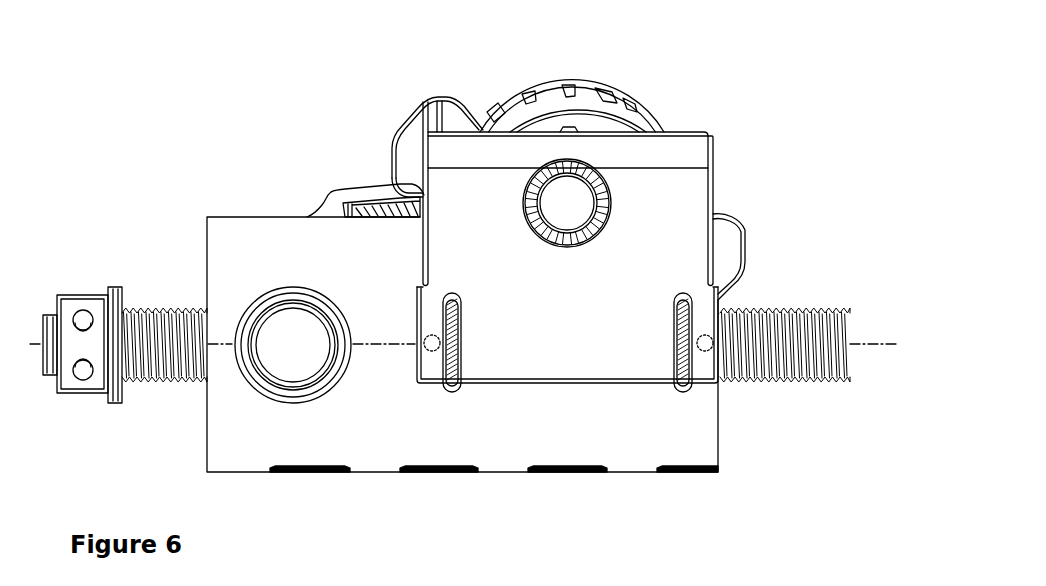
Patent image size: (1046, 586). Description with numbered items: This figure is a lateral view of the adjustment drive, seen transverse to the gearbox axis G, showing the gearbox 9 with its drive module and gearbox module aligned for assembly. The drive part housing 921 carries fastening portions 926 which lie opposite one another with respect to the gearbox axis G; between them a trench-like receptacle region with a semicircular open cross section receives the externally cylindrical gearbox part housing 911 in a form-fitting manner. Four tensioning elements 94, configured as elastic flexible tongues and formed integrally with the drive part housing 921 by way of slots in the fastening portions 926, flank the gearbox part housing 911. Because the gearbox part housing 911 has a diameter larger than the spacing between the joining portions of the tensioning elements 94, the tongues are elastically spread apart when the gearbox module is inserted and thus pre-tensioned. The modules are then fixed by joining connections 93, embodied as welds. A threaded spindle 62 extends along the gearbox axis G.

The gearbox 9 is at (298, 108).
The threaded spindle 62 is at (785, 310).
The gearbox axis G is at (897, 347).
The gearbox part housing 911 is at (663, 432).
The drive part housing 921 is at (643, 212).
The fastening portions 926 is at (582, 352).
The joining connections 93 is at (430, 349).
The tensioning elements 94 is at (435, 367).